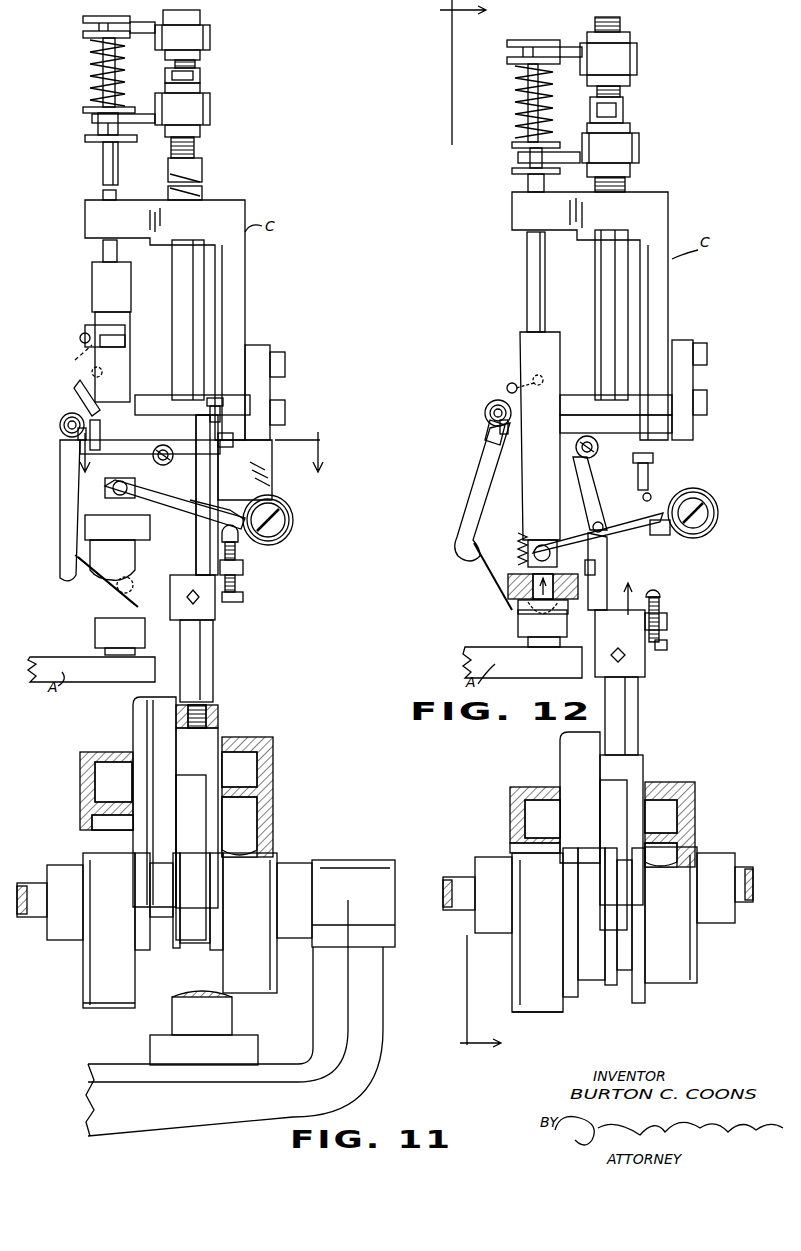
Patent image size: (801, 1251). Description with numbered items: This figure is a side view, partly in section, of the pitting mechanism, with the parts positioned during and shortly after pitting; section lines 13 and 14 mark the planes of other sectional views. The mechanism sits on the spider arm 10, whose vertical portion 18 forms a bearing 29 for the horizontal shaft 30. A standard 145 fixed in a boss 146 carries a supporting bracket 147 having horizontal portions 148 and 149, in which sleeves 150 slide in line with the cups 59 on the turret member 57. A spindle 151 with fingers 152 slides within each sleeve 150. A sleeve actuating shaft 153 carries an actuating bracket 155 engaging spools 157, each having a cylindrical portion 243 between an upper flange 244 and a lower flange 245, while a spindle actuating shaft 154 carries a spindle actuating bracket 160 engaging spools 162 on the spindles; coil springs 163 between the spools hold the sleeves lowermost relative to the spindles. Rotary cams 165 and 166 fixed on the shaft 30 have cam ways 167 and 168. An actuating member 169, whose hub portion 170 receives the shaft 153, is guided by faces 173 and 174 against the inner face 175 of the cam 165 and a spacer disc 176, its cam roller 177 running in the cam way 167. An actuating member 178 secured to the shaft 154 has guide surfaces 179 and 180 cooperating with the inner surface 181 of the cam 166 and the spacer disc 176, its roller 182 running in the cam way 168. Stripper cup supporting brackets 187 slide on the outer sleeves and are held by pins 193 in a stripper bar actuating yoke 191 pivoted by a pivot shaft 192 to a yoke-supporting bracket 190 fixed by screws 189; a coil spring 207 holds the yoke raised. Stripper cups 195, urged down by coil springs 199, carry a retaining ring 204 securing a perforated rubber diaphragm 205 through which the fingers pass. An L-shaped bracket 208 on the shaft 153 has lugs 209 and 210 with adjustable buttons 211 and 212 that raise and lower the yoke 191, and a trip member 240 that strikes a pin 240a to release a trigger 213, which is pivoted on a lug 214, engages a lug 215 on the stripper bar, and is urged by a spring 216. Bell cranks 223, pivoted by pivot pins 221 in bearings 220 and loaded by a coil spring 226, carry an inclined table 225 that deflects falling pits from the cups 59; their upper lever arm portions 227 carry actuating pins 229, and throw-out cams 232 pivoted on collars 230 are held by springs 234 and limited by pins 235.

In FIG. 11, the spider arm 10 is at (190, 1122).
In FIG. 12, the section line 13 is at (470, 535).
In FIG. 11, the section line 14 is at (212, 452).
In FIG. 11, the vertical portion 18 is at (378, 1006).
In FIG. 11, the bearing 29 is at (352, 872).
In FIG. 11, the horizontally extending shaft 30 is at (36, 905).
In FIG. 12, the horizontally extending shaft 30 is at (462, 883).
In FIG. 11, the plate 57 is at (91, 669).
In FIG. 12, the plate 57 is at (522, 662).
In FIG. 11, the cups 59 is at (95, 631).
In FIG. 12, the cups 59 is at (518, 636).
In FIG. 11, the standard 145 is at (232, 1016).
In FIG. 11, the boss 146 is at (258, 1049).
In FIG. 11, the supporting bracket 147 is at (235, 302).
In FIG. 12, the supporting bracket 147 is at (660, 313).
In FIG. 11, the horizontally extending portion 148 is at (145, 399).
In FIG. 12, the horizontally extending portion 148 is at (667, 434).
In FIG. 11, the horizontally extending portion 149 is at (100, 228).
In FIG. 12, the horizontally extending portion 149 is at (527, 220).
In FIG. 11, the sleeves 150 is at (105, 161).
In FIG. 12, the sleeves 150 is at (532, 291).
In FIG. 11, the spindle 151 is at (90, 76).
In FIG. 12, the spindle 151 is at (516, 99).
In FIG. 11, the fingers 152 is at (130, 575).
In FIG. 11, the sleeve actuating shaft 153 is at (202, 179).
In FIG. 12, the sleeve actuating shaft 153 is at (630, 186).
In FIG. 11, the spindle actuating shaft 154 is at (200, 75).
In FIG. 12, the spindle actuating shaft 154 is at (624, 106).
In FIG. 11, the actuating bracket 155 is at (106, 126).
In FIG. 12, the actuating bracket 155 is at (620, 156).
In FIG. 11, the spools 157 is at (92, 118).
In FIG. 12, the spools 157 is at (520, 157).
In FIG. 11, the spindle actuating bracket 160 is at (168, 32).
In FIG. 12, the spindle actuating bracket 160 is at (600, 61).
In FIG. 11, the spools 162 is at (83, 20).
In FIG. 12, the spools 162 is at (528, 40).
In FIG. 11, the coil springs 163 is at (94, 55).
In FIG. 12, the coil springs 163 is at (520, 113).
In FIG. 11, the rotary cam 165 is at (272, 845).
In FIG. 12, the rotary cam 165 is at (694, 828).
In FIG. 11, the rotary cam 166 is at (82, 812).
In FIG. 12, the rotary cam 166 is at (510, 816).
In FIG. 11, the cam way 167 is at (261, 776).
In FIG. 12, the cam way 167 is at (677, 809).
In FIG. 11, the cam way 168 is at (95, 781).
In FIG. 12, the cam way 168 is at (525, 839).
In FIG. 11, the actuating member 169 is at (201, 901).
In FIG. 12, the actuating member 169 is at (612, 987).
In FIG. 11, the hub portion 170 is at (210, 741).
In FIG. 12, the hub portion 170 is at (627, 771).
In FIG. 12, the guide face 173 is at (645, 1003).
In FIG. 12, the guide face 174 is at (600, 985).
In FIG. 11, the inner face 175 is at (225, 931).
In FIG. 12, the inner face 175 is at (649, 951).
In FIG. 11, the spacer disc 176 is at (177, 937).
In FIG. 12, the spacer disc 176 is at (603, 906).
In FIG. 11, the cam roller 177 is at (259, 761).
In FIG. 12, the cam roller 177 is at (665, 791).
In FIG. 11, the actuating member 178 is at (135, 745).
In FIG. 12, the actuating member 178 is at (573, 743).
In FIG. 11, the guide surface 179 is at (85, 921).
In FIG. 12, the guide surface 179 is at (563, 951).
In FIG. 11, the guide surface 180 is at (176, 826).
In FIG. 12, the guide surface 180 is at (605, 831).
In FIG. 11, the inner surface 181 is at (137, 996).
In FIG. 12, the inner surface 181 is at (560, 1005).
In FIG. 11, the roller 182 is at (110, 763).
In FIG. 12, the roller 182 is at (540, 801).
In FIG. 11, the stripper cup supporting brackets 187 is at (128, 362).
In FIG. 12, the stripper cup supporting brackets 187 is at (532, 352).
In FIG. 11, the screws 189 is at (282, 404).
In FIG. 12, the screws 189 is at (707, 401).
In FIG. 11, the yoke-supporting bracket 190 is at (265, 486).
In FIG. 12, the yoke-supporting bracket 190 is at (645, 428).
In FIG. 11, the stripper bar actuating yoke 191 is at (255, 500).
In FIG. 12, the stripper bar actuating yoke 191 is at (708, 530).
In FIG. 11, the pivot shaft 192 is at (286, 518).
In FIG. 12, the pivot shaft 192 is at (708, 519).
In FIG. 11, the pins 193 is at (105, 491).
In FIG. 12, the pins 193 is at (528, 553).
In FIG. 11, the stripper cups 195 is at (100, 551).
In FIG. 12, the stripper cups 195 is at (506, 588).
In FIG. 11, the coil springs 199 is at (96, 525).
In FIG. 12, the retaining ring 204 is at (560, 600).
In FIG. 11, the perforated rubber diaphragm 205 is at (95, 566).
In FIG. 11, the coil spring 207 is at (283, 531).
In FIG. 12, the coil spring 207 is at (715, 511).
In FIG. 11, the L-shaped bracket 208 is at (218, 470).
In FIG. 12, the L-shaped bracket 208 is at (662, 613).
In FIG. 11, the lug 209 is at (246, 570).
In FIG. 12, the lug 209 is at (667, 621).
In FIG. 11, the lug 210 is at (245, 432).
In FIG. 12, the lug 210 is at (650, 486).
In FIG. 11, the adjustable button 211 is at (241, 550).
In FIG. 12, the adjustable button 211 is at (660, 591).
In FIG. 11, the adjustable button 212 is at (224, 448).
In FIG. 12, the adjustable button 212 is at (652, 497).
In FIG. 11, the trigger 213 is at (160, 522).
In FIG. 12, the trigger 213 is at (582, 492).
In FIG. 11, the lug 214 is at (160, 452).
In FIG. 12, the lug 214 is at (584, 436).
In FIG. 12, the lug 215 is at (590, 527).
In FIG. 11, the spring 216 is at (195, 442).
In FIG. 12, the spring 216 is at (573, 461).
In FIG. 11, the bearings 220 is at (95, 428).
In FIG. 12, the bearings 220 is at (500, 431).
In FIG. 11, the pivot pin 221 is at (60, 424).
In FIG. 12, the pivot pin 221 is at (497, 400).
In FIG. 11, the bell crank 223 is at (66, 489).
In FIG. 12, the bell crank 223 is at (478, 466).
In FIG. 11, the table 225 is at (101, 591).
In FIG. 12, the table 225 is at (490, 571).
In FIG. 11, the coil spring 226 is at (78, 433).
In FIG. 12, the coil spring 226 is at (495, 427).
In FIG. 11, the upper lever arm portion 227 is at (85, 379).
In FIG. 12, the upper lever arm portion 227 is at (507, 385).
In FIG. 11, the bell crank actuating pins 229 is at (90, 373).
In FIG. 12, the bell crank actuating pins 229 is at (545, 376).
In FIG. 11, the collar 230 is at (88, 326).
In FIG. 11, the throw-out cam 232 is at (72, 358).
In FIG. 11, the springs 234 is at (80, 338).
In FIG. 11, the pins 235 is at (125, 339).
In FIG. 11, the trip member 240 is at (178, 582).
In FIG. 12, the trip member 240 is at (607, 595).
In FIG. 11, the pin 240a is at (243, 596).
In FIG. 12, the pin 240a is at (592, 556).
In FIG. 11, the cylindrical portion 243 is at (112, 144).
In FIG. 12, the cylindrical portion 243 is at (532, 166).
In FIG. 11, the upper flange 244 is at (95, 110).
In FIG. 12, the upper flange 244 is at (512, 145).
In FIG. 11, the lower flange 245 is at (88, 138).
In FIG. 12, the lower flange 245 is at (512, 171).